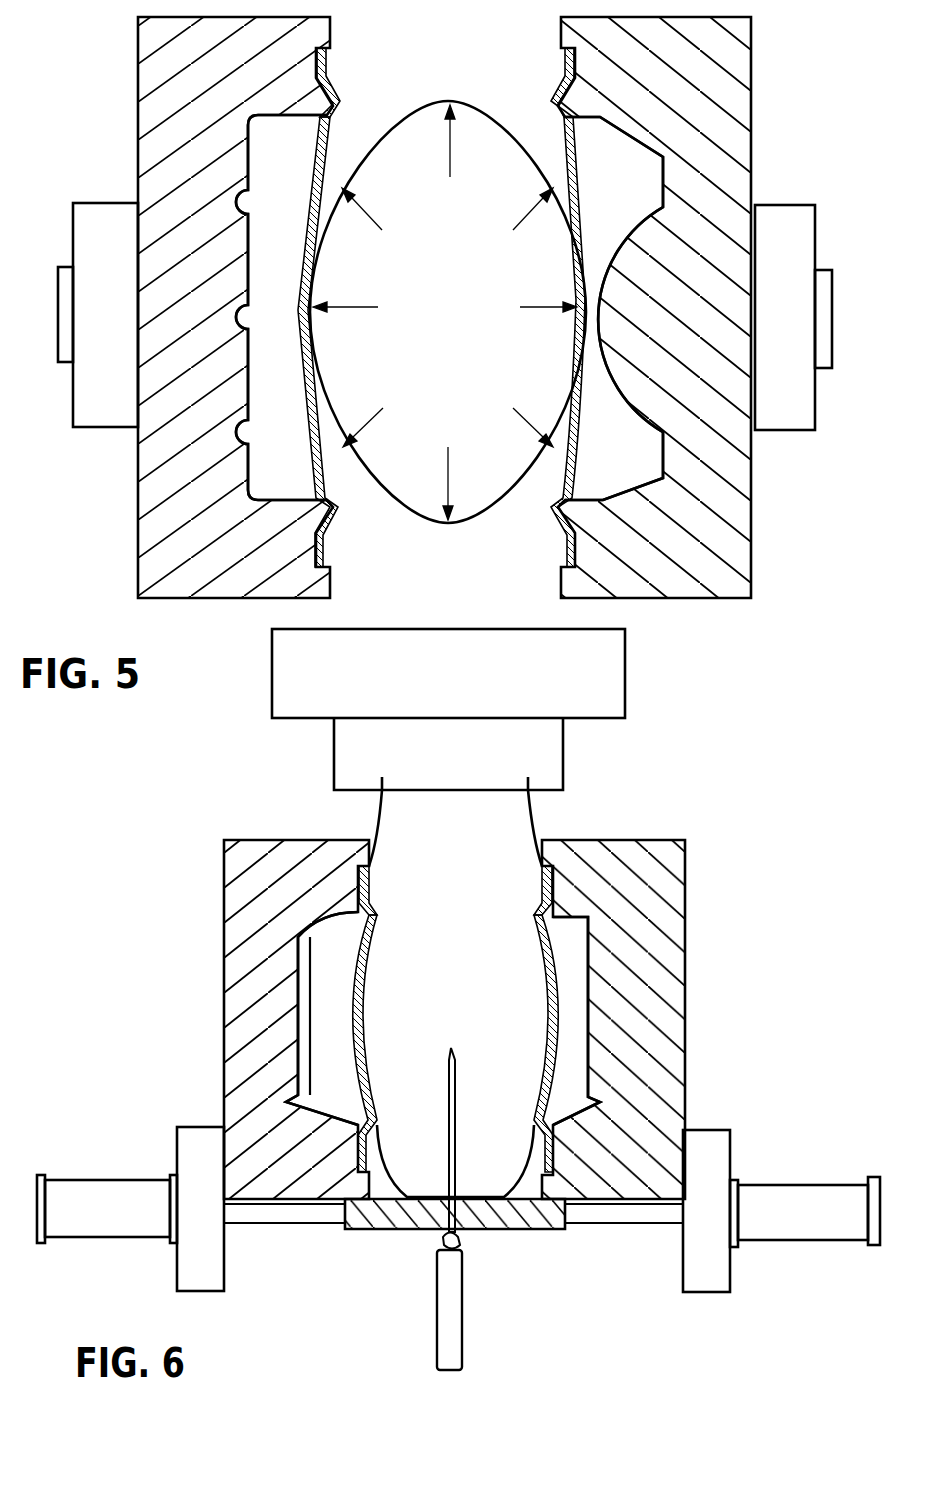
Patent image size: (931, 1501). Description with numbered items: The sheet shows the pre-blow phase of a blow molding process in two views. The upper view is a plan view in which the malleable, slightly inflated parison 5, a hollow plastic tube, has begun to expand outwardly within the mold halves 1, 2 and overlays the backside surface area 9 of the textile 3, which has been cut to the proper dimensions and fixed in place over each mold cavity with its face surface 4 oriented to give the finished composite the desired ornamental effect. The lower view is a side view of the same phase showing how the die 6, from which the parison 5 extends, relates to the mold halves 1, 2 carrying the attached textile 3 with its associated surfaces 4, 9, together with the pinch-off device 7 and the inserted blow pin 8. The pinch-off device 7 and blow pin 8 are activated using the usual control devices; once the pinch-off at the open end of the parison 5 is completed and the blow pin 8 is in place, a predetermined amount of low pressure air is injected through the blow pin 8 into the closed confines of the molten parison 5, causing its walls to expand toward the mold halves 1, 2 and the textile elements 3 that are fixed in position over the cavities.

In FIG. 5, the mold half 1 is at (135, 512).
In FIG. 6, the mold half 1 is at (224, 948).
In FIG. 5, the mold half 2 is at (752, 490).
In FIG. 6, the mold half 2 is at (687, 968).
In FIG. 5, the textile 3 is at (560, 135).
In FIG. 6, the textile 3 is at (540, 885).
In FIG. 5, the face surface 4 is at (310, 440).
In FIG. 6, the face surface 4 is at (352, 1048).
In FIG. 5, the parison 5 is at (418, 520).
In FIG. 6, the parison 5 is at (543, 820).
In FIG. 6, the die 6 is at (333, 755).
In FIG. 6, the pinch-off device 7 is at (400, 1232).
In FIG. 6, the blow pin 8 is at (437, 1300).
In FIG. 5, the backside surface area 9 is at (323, 472).
In FIG. 6, the backside surface area 9 is at (365, 1150).